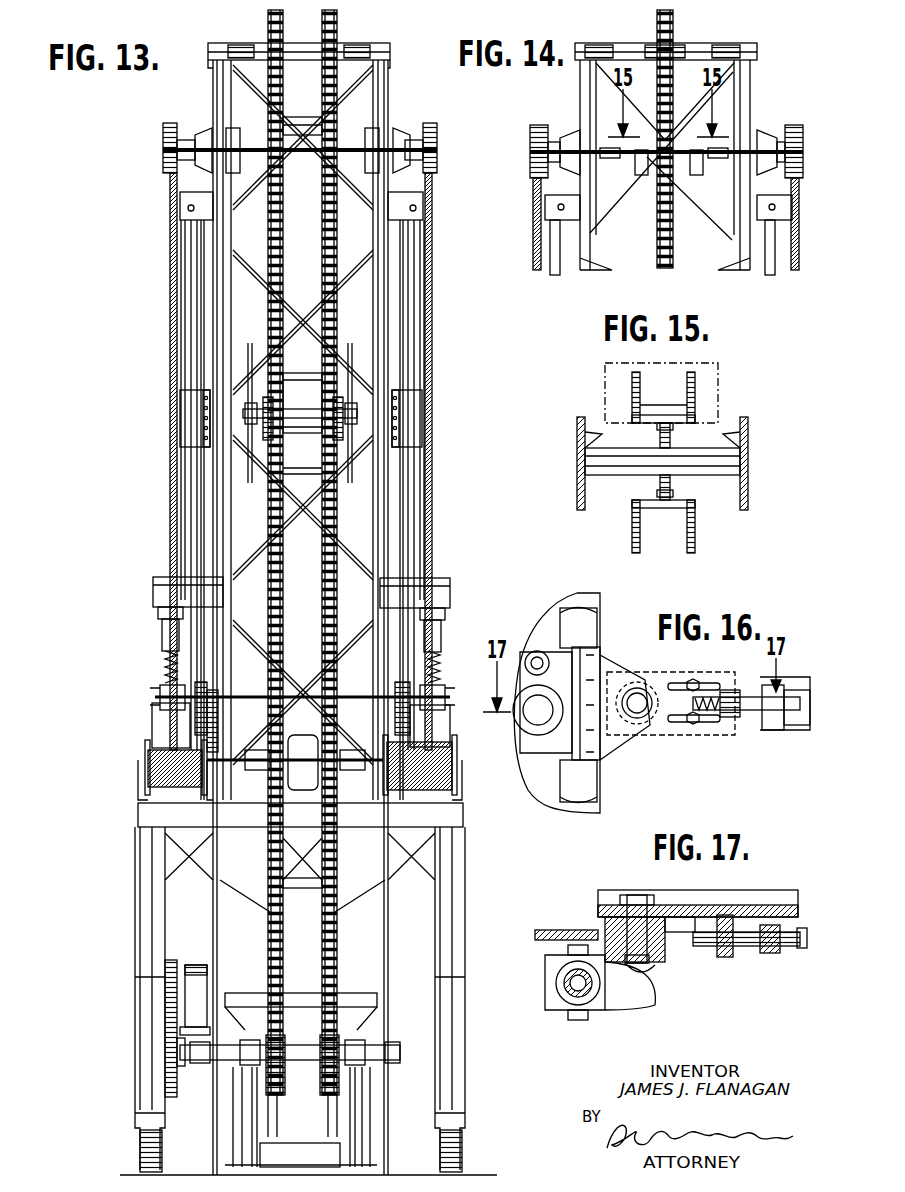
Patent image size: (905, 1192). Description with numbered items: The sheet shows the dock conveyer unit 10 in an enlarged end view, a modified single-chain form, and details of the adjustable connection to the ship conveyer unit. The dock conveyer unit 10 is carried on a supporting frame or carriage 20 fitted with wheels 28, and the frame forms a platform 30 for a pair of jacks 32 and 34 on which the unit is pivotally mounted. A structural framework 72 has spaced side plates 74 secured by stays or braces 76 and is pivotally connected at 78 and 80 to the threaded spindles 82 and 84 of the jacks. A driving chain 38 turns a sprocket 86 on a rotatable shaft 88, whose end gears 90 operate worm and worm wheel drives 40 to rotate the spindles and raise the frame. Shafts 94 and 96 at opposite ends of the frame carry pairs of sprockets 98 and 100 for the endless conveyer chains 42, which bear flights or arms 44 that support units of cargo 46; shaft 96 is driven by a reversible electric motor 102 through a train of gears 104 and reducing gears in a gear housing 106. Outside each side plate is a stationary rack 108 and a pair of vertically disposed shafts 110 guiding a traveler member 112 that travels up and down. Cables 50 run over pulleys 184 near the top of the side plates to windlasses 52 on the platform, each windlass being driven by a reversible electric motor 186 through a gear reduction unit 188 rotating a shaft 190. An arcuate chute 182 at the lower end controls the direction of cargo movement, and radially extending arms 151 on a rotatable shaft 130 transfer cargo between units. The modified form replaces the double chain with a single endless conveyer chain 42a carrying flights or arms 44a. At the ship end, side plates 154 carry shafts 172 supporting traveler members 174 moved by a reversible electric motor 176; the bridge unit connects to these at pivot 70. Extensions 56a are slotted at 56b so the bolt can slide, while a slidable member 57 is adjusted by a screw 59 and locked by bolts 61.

In FIG. 13, the dock conveyer unit 10 is at (130, 830).
In FIG. 13, the supporting frame or carriage 20 is at (455, 1050).
In FIG. 13, the wheels 28 is at (138, 1152).
In FIG. 13, the platform 30 is at (452, 820).
In FIG. 13, the jack 32 is at (150, 735).
In FIG. 13, the jack 34 is at (440, 733).
In FIG. 13, the driving chain 38 is at (210, 732).
In FIG. 13, the worm and worm wheel drive 40 is at (158, 700).
In FIG. 13, the endless conveyer chain 42 is at (322, 224).
In FIG. 14, the single endless conveyer chain 42a is at (670, 230).
In FIG. 15, the single endless conveyer chain 42a is at (672, 430).
In FIG. 13, the flights or arms 44 is at (268, 142).
In FIG. 14, the flights or arms 44a is at (645, 165).
In FIG. 15, the flights or arms 44a is at (658, 405).
In FIG. 15, the unit of cargo 46 is at (718, 380).
In FIG. 13, the cable 50 is at (170, 301).
In FIG. 14, the cable 50 is at (533, 209).
In FIG. 13, the windlass 52 is at (170, 772).
In FIG. 17, the extension 56a is at (762, 898).
In FIG. 17, the slot 56b is at (616, 908).
In FIG. 16, the slidable member 57 is at (690, 683).
In FIG. 17, the slidable member 57 is at (678, 905).
In FIG. 16, the screw 59 is at (745, 715).
In FIG. 17, the screw 59 is at (742, 950).
In FIG. 16, the bolts 61 is at (694, 726).
In FIG. 16, the connecting pivot or bolt 70 is at (637, 690).
In FIG. 17, the connecting pivot or bolt 70 is at (650, 973).
In FIG. 13, the structural framework 72 is at (402, 512).
In FIG. 13, the side plate 74 is at (212, 186).
In FIG. 14, the side plate 74 is at (580, 100).
In FIG. 15, the side plate 74 is at (577, 440).
In FIG. 13, the stays or braces 76 is at (338, 272).
In FIG. 14, the stays or braces 76 is at (706, 214).
In FIG. 15, the stays or braces 76 is at (714, 472).
In FIG. 13, the pivotal connection 78 is at (155, 590).
In FIG. 13, the pivotal connection 80 is at (450, 590).
In FIG. 13, the threaded spindle 82 is at (163, 670).
In FIG. 13, the threaded spindle 84 is at (440, 670).
In FIG. 13, the sprocket 86 is at (208, 690).
In FIG. 13, the rotatable shaft 88 is at (350, 692).
In FIG. 13, the gear 90 is at (394, 700).
In FIG. 13, the rotatable shaft 94 is at (297, 60).
In FIG. 14, the rotatable shaft 94 is at (636, 50).
In FIG. 13, the rotatable shaft 96 is at (190, 1062).
In FIG. 13, the sprockets 98 is at (322, 44).
In FIG. 14, the sprockets 98 is at (674, 26).
In FIG. 13, the sprockets 100 is at (320, 1094).
In FIG. 13, the reversible electric motor 102 is at (165, 1000).
In FIG. 13, the train of gears 104 is at (177, 1052).
In FIG. 13, the gear housing 106 is at (195, 966).
In FIG. 13, the stationary rack 108 is at (183, 346).
In FIG. 13, the vertically disposed shafts 110 is at (193, 513).
In FIG. 14, the vertically disposed shafts 110 is at (556, 276).
In FIG. 13, the traveler member 112 is at (186, 416).
In FIG. 13, the rotatable shaft 130 is at (305, 410).
In FIG. 13, the radially extending arms 151 is at (322, 470).
In FIG. 16, the side plate 154 is at (600, 803).
In FIG. 17, the side plate 154 is at (552, 930).
In FIG. 16, the vertically disposed shafts 172 is at (585, 630).
In FIG. 17, the vertically disposed shafts 172 is at (590, 992).
In FIG. 16, the traveler member 174 is at (600, 745).
In FIG. 17, the traveler member 174 is at (560, 1005).
In FIG. 16, the reversible electric motor 176 is at (520, 730).
In FIG. 13, the arcuate chute 182 is at (356, 1160).
In FIG. 13, the pulley 184 is at (160, 152).
In FIG. 14, the pulley 184 is at (531, 143).
In FIG. 13, the reversible electric motor 186 is at (270, 772).
In FIG. 13, the gear reduction unit 188 is at (301, 740).
In FIG. 13, the shaft 190 is at (350, 772).